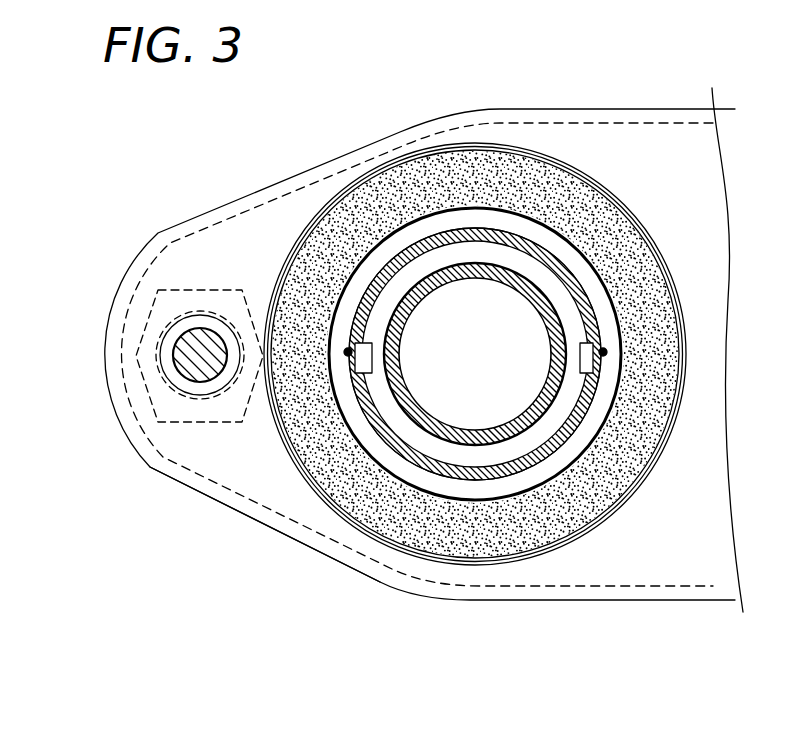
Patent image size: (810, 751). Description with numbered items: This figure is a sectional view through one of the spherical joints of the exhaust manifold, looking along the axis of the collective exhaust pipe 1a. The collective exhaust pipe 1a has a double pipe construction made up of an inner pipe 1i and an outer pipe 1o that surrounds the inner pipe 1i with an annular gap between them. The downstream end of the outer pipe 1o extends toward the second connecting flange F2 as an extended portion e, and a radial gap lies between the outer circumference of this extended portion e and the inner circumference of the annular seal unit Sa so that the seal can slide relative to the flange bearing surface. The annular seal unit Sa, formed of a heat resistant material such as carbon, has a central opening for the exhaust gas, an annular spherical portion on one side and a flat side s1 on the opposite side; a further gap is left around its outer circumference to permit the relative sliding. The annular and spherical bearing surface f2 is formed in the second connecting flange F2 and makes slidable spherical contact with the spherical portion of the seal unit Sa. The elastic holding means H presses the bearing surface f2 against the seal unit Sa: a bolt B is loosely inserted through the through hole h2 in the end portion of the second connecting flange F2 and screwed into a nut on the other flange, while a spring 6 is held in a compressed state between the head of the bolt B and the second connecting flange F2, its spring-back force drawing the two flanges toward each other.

The elastic holding means H is at (100, 412).
The second connecting flange F2 is at (320, 552).
The bolt B is at (200, 330).
The through hole h2 is at (180, 380).
The spring 6 is at (133, 337).
The annular seal unit Sa is at (308, 224).
The side of annular seal unit s1 is at (431, 175).
The annular and spherical bearing surface f2 is at (517, 223).
The collective exhaust pipe 1a is at (476, 458).
The inner pipe 1i is at (503, 440).
The outer pipe 1o is at (547, 457).
The extended portion of outer pipe e is at (565, 273).